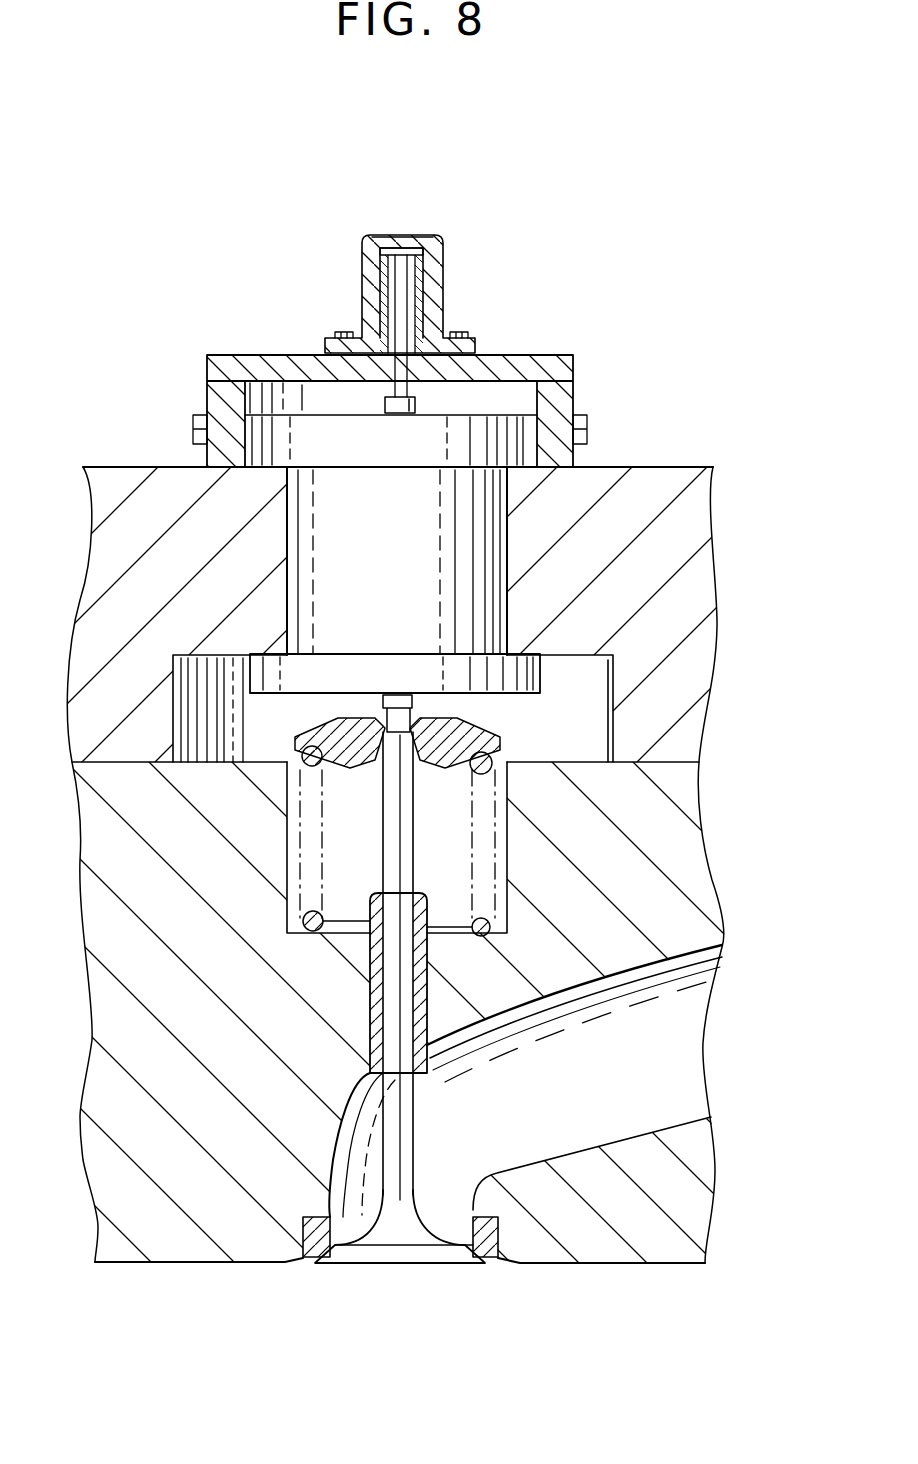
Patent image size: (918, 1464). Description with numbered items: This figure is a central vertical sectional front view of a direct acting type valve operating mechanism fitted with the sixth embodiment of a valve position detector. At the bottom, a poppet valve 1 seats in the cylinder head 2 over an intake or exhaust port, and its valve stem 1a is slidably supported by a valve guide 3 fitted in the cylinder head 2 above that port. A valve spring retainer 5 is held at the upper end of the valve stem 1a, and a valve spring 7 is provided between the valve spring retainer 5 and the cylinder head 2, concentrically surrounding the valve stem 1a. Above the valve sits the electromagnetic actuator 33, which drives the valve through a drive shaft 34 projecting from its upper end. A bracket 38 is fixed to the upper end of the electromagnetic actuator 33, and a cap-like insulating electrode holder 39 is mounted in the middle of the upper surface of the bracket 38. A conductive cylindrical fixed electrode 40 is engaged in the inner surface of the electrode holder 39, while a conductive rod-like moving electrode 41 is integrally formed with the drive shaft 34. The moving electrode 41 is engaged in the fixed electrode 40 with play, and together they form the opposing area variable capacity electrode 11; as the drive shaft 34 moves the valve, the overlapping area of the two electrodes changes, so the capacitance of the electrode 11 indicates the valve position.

The poppet valve 1 is at (427, 1149).
The valve stem 1a is at (413, 1100).
The cylinder head 2 is at (197, 1258).
The valve guide 3 is at (370, 1000).
The valve spring retainer 5 is at (316, 721).
The valve spring 7 is at (288, 914).
The opposing area variable capacity electrode 11 is at (405, 225).
The electromagnetic actuator 33 is at (518, 541).
The drive shaft 34 is at (418, 405).
The bracket 38 is at (573, 371).
The insulating electrode holder 39 is at (425, 295).
The fixed electrode 40 is at (415, 310).
The moving electrode 41 is at (432, 285).